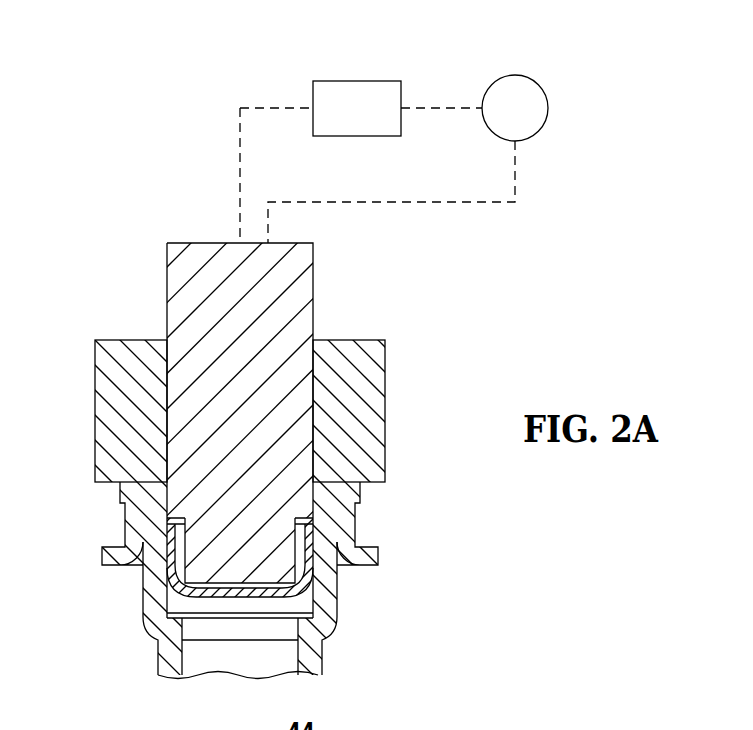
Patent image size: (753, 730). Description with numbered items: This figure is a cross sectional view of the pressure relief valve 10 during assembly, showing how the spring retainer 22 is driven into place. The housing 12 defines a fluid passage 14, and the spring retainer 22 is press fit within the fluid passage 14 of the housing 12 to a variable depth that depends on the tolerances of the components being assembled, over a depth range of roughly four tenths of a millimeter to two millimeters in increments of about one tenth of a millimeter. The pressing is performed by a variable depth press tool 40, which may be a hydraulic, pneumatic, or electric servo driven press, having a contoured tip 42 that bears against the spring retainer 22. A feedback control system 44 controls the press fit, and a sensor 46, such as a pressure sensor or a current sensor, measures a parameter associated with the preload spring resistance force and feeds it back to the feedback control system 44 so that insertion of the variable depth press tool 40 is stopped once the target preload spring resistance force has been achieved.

The pressure relief valve 10 is at (400, 527).
The housing 12 is at (320, 623).
The fluid passage 14 is at (181, 607).
The spring retainer 22 is at (298, 556).
The variable depth press tool 40 is at (298, 282).
The contoured tip 42 is at (220, 598).
The feedback control system 44 is at (357, 81).
The sensor 46 is at (548, 108).